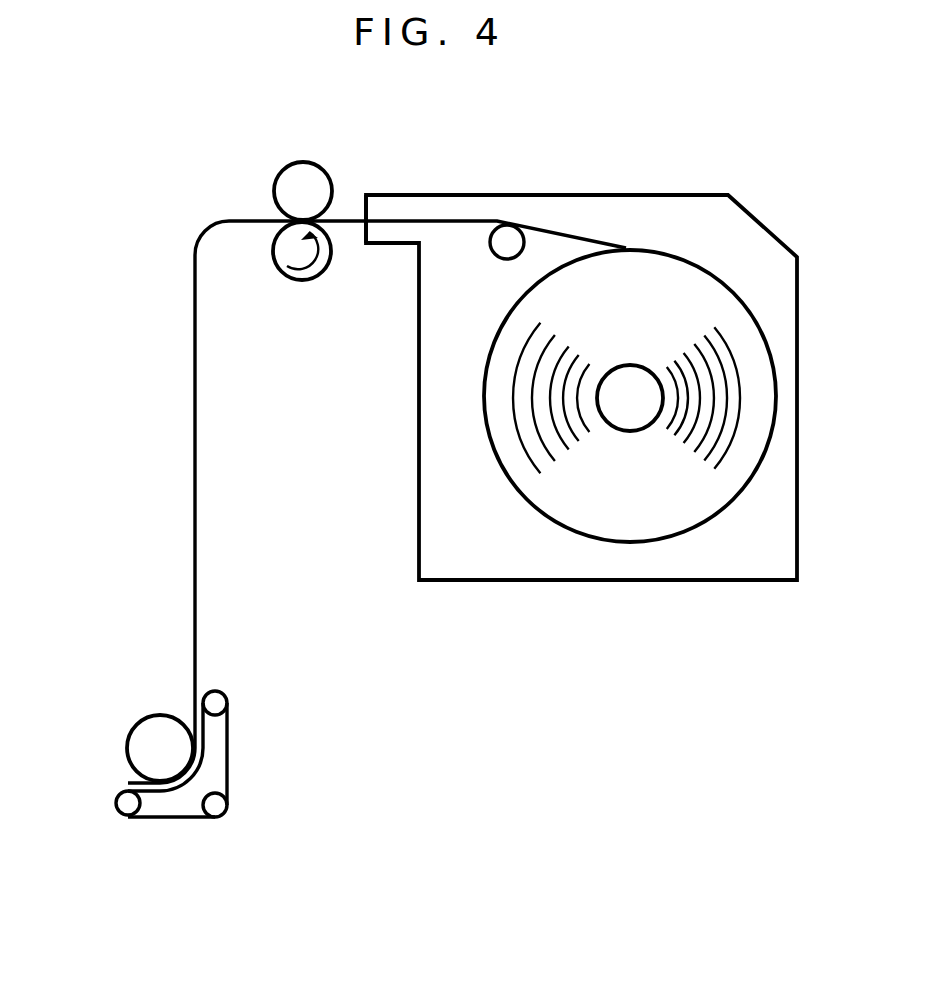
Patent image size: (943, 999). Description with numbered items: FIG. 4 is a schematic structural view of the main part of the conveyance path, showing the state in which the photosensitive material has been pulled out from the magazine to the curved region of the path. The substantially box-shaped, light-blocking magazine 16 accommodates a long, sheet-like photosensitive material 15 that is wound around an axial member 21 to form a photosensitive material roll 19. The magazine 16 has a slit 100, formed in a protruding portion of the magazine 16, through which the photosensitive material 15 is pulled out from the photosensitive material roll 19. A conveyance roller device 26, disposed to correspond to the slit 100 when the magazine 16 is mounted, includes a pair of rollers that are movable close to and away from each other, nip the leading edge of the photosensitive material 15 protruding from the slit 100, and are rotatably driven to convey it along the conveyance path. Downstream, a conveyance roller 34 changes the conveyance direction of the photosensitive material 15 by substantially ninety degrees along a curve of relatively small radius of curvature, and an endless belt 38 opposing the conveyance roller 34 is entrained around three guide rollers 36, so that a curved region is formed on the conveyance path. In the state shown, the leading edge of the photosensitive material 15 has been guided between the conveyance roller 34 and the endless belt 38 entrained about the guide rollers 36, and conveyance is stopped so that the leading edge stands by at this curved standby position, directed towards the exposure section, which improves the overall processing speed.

The photosensitive material 15 is at (560, 233).
The magazine 16 is at (743, 243).
The photosensitive material roll 19 is at (622, 475).
The axial member 21 is at (638, 412).
The conveyance roller device 26 is at (273, 242).
The conveyance roller 34 is at (145, 742).
The guide rollers 36 is at (218, 703).
The endless belt 38 is at (233, 775).
The slit 100 is at (363, 218).